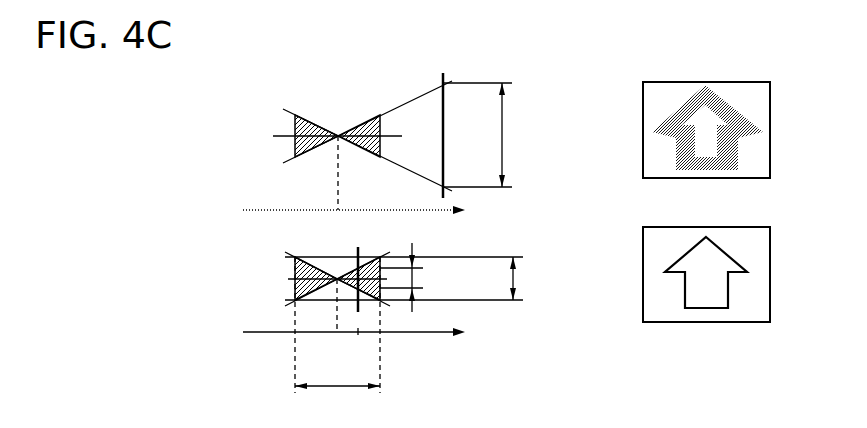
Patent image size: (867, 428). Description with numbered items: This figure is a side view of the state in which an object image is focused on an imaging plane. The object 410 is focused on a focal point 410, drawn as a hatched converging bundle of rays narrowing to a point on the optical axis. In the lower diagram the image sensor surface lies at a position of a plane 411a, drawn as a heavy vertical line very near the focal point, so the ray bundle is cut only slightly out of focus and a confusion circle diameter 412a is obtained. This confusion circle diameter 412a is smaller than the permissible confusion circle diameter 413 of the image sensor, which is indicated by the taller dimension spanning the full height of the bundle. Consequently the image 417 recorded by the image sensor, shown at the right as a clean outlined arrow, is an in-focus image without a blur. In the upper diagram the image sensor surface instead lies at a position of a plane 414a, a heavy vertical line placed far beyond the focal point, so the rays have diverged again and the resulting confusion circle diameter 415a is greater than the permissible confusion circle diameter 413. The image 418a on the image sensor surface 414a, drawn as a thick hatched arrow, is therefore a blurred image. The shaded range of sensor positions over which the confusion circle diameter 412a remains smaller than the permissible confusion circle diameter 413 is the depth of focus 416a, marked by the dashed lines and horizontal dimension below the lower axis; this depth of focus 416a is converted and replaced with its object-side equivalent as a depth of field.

The object / focal point 410 is at (336, 277).
The plane 411a is at (359, 248).
The confusion circle diameter 412a is at (413, 280).
The permissible confusion circle diameter 413 is at (515, 280).
The plane / image sensor surface 414a is at (443, 72).
The confusion circle diameter 415a is at (503, 120).
The depth of focus 416a is at (332, 382).
The image 417 is at (727, 247).
The image 418a is at (728, 103).